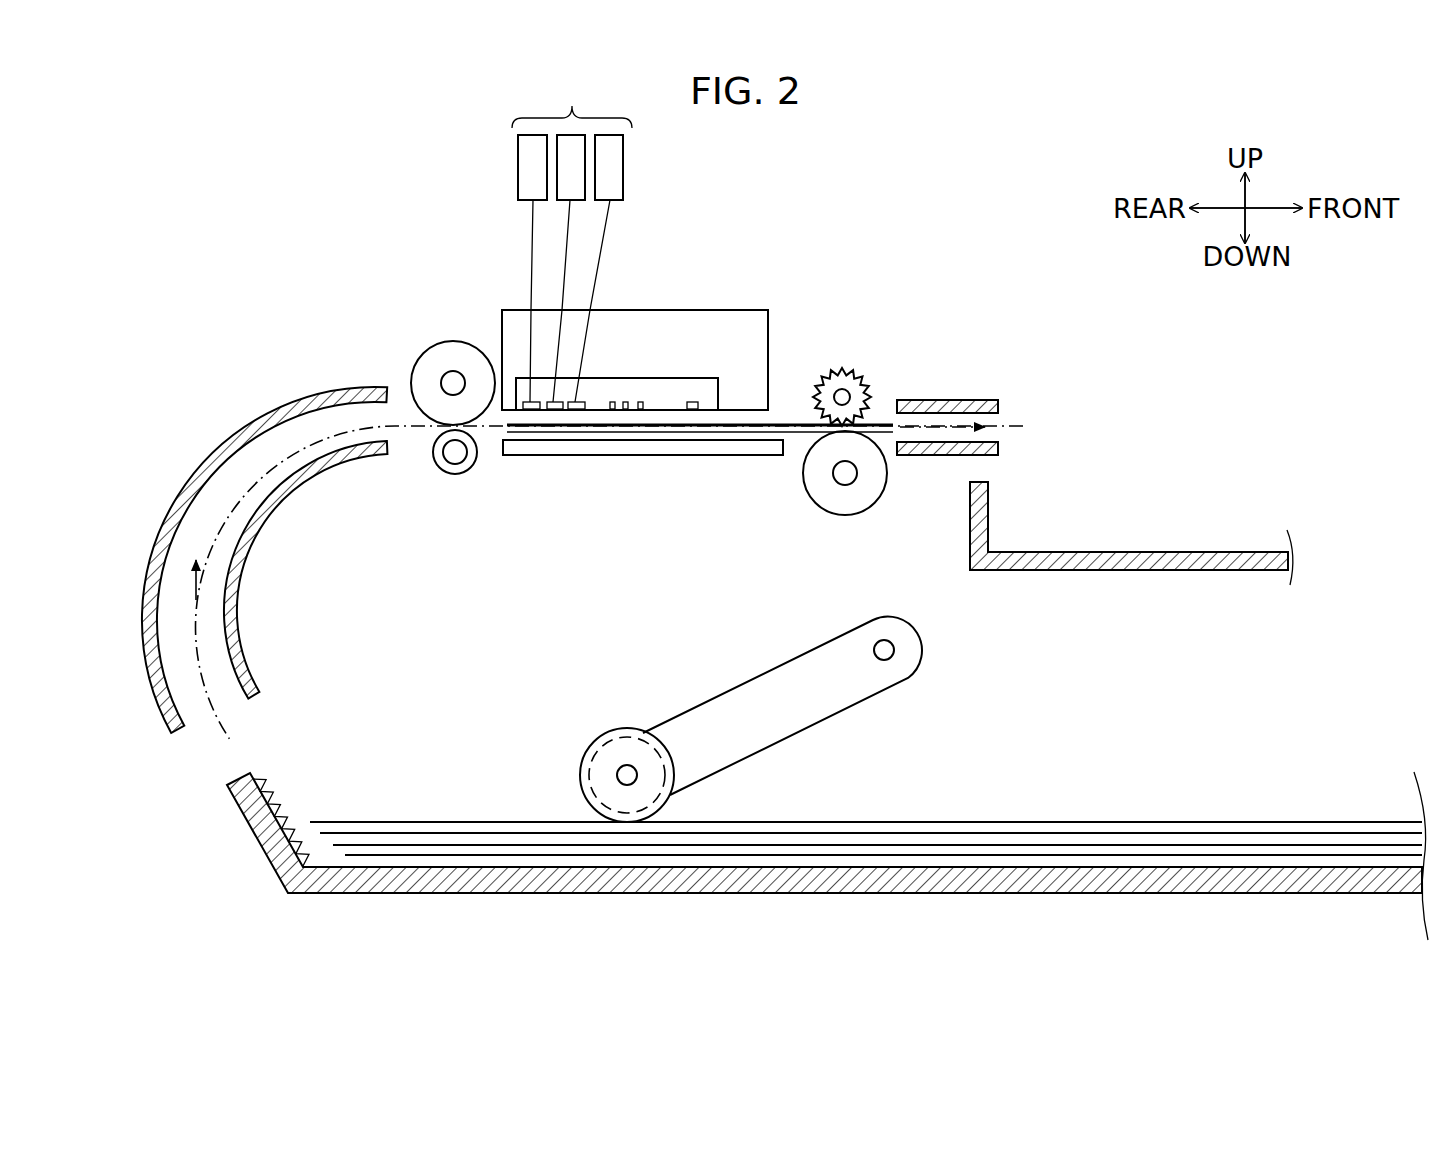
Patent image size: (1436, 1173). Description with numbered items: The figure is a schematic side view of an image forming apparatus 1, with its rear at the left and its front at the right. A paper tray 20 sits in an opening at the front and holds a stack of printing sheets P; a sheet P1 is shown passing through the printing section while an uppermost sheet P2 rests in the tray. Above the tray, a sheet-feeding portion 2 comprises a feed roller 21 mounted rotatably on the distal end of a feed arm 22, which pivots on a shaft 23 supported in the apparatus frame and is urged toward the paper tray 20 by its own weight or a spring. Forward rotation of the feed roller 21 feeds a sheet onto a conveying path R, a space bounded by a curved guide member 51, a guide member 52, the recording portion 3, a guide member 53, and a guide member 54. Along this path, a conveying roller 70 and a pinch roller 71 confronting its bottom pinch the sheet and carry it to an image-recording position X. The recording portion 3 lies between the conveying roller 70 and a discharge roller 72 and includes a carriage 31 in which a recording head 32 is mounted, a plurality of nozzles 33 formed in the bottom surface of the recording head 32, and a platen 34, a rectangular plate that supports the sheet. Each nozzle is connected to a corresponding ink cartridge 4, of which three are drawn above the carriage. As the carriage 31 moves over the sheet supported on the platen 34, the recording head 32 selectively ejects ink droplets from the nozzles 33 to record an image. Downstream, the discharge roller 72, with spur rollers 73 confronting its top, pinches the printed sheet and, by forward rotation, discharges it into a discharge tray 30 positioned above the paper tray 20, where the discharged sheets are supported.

The image forming apparatus 1 is at (975, 255).
The sheet-feeding portion 2 is at (749, 719).
The recording portion 3 is at (634, 363).
The ink cartridge 4 is at (572, 233).
The paper tray 20 is at (995, 900).
The feed roller 21 is at (610, 735).
The feed arm 22 is at (755, 680).
The shaft 23 is at (888, 664).
The discharge tray 30 is at (1112, 552).
The carriage 31 is at (735, 310).
The recording head 32 is at (637, 378).
The nozzles 33 is at (531, 409).
The platen 34 is at (718, 456).
The guide member 51 is at (145, 613).
The guide member 52 is at (245, 625).
The guide member 53 is at (937, 400).
The guide member 54 is at (937, 456).
The conveying roller 70 is at (453, 341).
The pinch roller 71 is at (455, 475).
The discharge roller 72 is at (845, 516).
The spur rollers 73 is at (842, 368).
The printing sheets P is at (1152, 820).
The sheet being printed P1 is at (637, 433).
The uppermost sheet P2 is at (450, 822).
The conveying path R is at (200, 541).
The image-recording position X is at (508, 413).